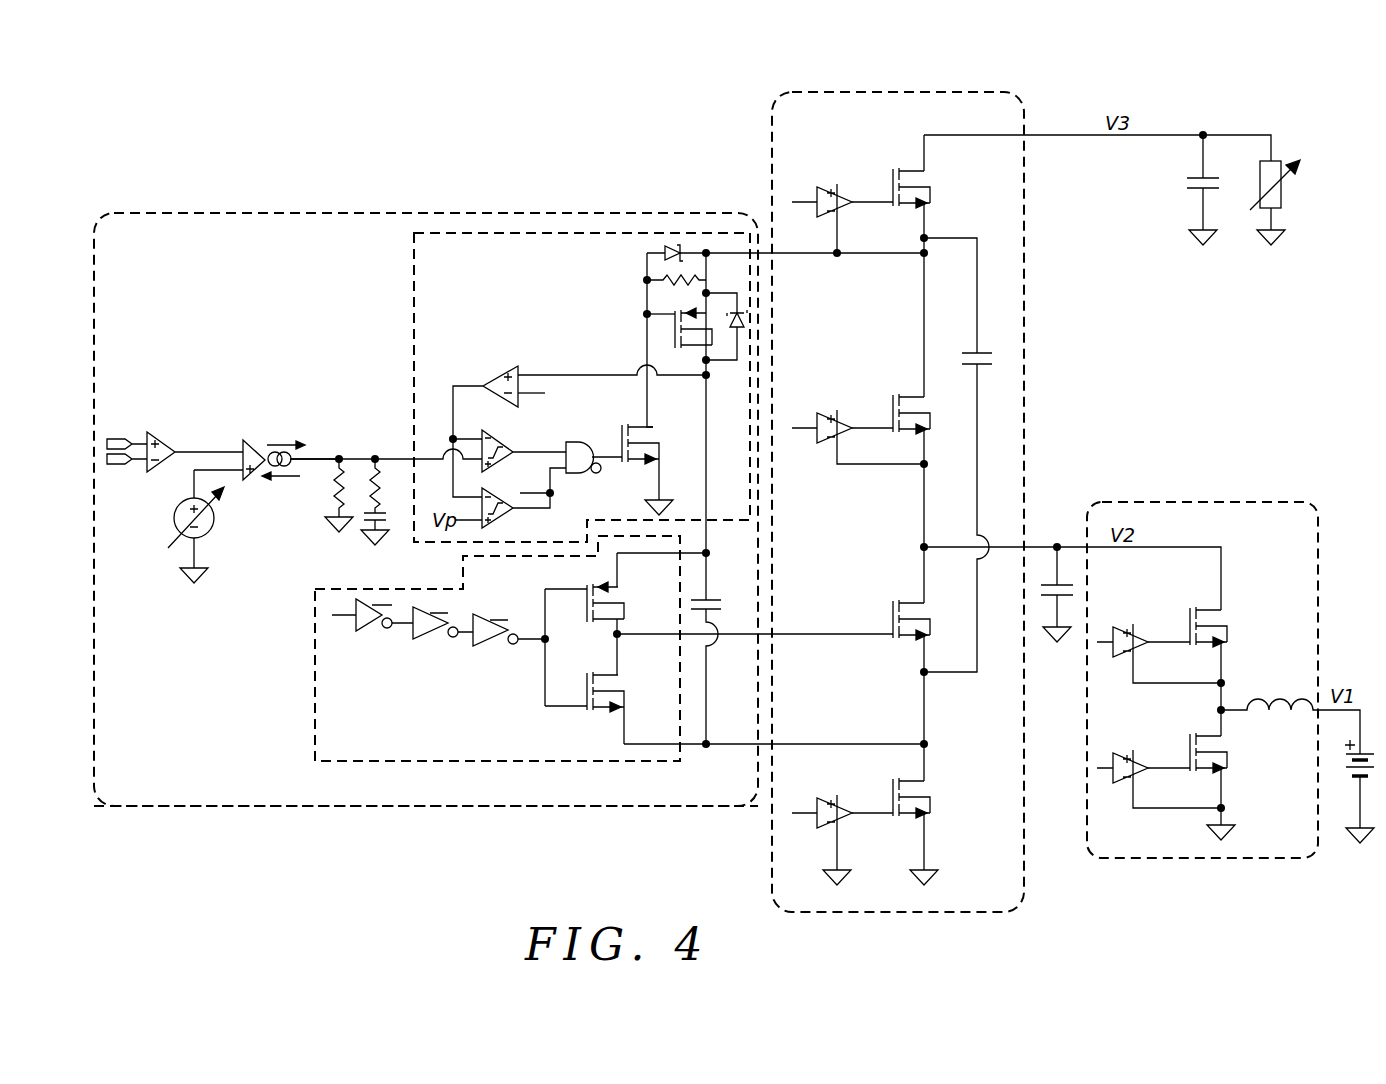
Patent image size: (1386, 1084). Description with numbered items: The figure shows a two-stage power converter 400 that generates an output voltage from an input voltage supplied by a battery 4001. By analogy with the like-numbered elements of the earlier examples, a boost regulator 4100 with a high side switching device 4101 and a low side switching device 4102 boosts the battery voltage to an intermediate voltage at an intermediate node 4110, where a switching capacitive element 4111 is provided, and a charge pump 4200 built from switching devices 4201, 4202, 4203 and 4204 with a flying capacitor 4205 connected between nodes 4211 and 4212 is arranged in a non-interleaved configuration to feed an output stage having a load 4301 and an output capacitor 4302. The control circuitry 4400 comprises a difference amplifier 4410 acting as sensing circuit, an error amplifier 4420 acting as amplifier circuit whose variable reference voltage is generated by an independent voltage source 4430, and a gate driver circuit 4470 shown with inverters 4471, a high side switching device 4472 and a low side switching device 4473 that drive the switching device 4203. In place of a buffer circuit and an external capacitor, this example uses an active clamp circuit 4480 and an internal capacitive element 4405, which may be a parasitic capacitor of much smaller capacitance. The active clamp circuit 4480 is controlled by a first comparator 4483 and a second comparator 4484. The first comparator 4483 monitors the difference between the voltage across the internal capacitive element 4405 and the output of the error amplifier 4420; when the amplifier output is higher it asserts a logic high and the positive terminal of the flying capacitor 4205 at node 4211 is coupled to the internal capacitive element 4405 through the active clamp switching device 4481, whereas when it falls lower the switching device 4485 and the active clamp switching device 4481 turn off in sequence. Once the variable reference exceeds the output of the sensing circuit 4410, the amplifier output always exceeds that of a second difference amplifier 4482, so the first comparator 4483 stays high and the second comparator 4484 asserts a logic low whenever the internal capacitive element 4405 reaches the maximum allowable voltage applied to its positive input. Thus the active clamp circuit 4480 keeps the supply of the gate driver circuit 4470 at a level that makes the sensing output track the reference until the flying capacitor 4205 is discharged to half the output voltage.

The two-stage power converter 400 is at (290, 191).
The control circuitry 4400 is at (465, 807).
The active clamp circuit 4480 is at (412, 284).
The gate driver circuit 4470 is at (313, 710).
The switched-capacitor converter stage 4200 is at (960, 90).
The inductive output stage 4100 is at (1266, 502).
The first switch transistor 4201 is at (890, 170).
The second switch transistor 4202 is at (890, 398).
The switching device 4203 is at (890, 603).
The fourth switch transistor 4204 is at (930, 792).
The flying capacitor 4205 is at (990, 347).
The node 4211 is at (930, 238).
The second node 4212 is at (930, 676).
The intermediate node 4110 is at (1057, 544).
The intermediate capacitor 4111 is at (1046, 589).
The high-side transistor 4101 is at (1186, 612).
The low-side transistor 4102 is at (1222, 745).
The battery 4001 is at (1350, 786).
The variable load resistor 4301 is at (1288, 187).
The output capacitor 4302 is at (1190, 176).
The difference amplifier 4410 is at (155, 433).
The error amplifier 4420 is at (252, 441).
The independent voltage source 4430 is at (175, 512).
The active clamp switching device 4481 is at (660, 327).
The second difference amplifier 4482 is at (510, 366).
The first comparator 4483 is at (491, 434).
The second comparator 4484 is at (505, 517).
The switching device 4485 is at (651, 431).
The internal capacitive element 4405 is at (713, 592).
The inverters 4471 is at (468, 656).
The PMOS driver transistor 4472 is at (578, 583).
The NMOS driver transistor 4473 is at (582, 712).